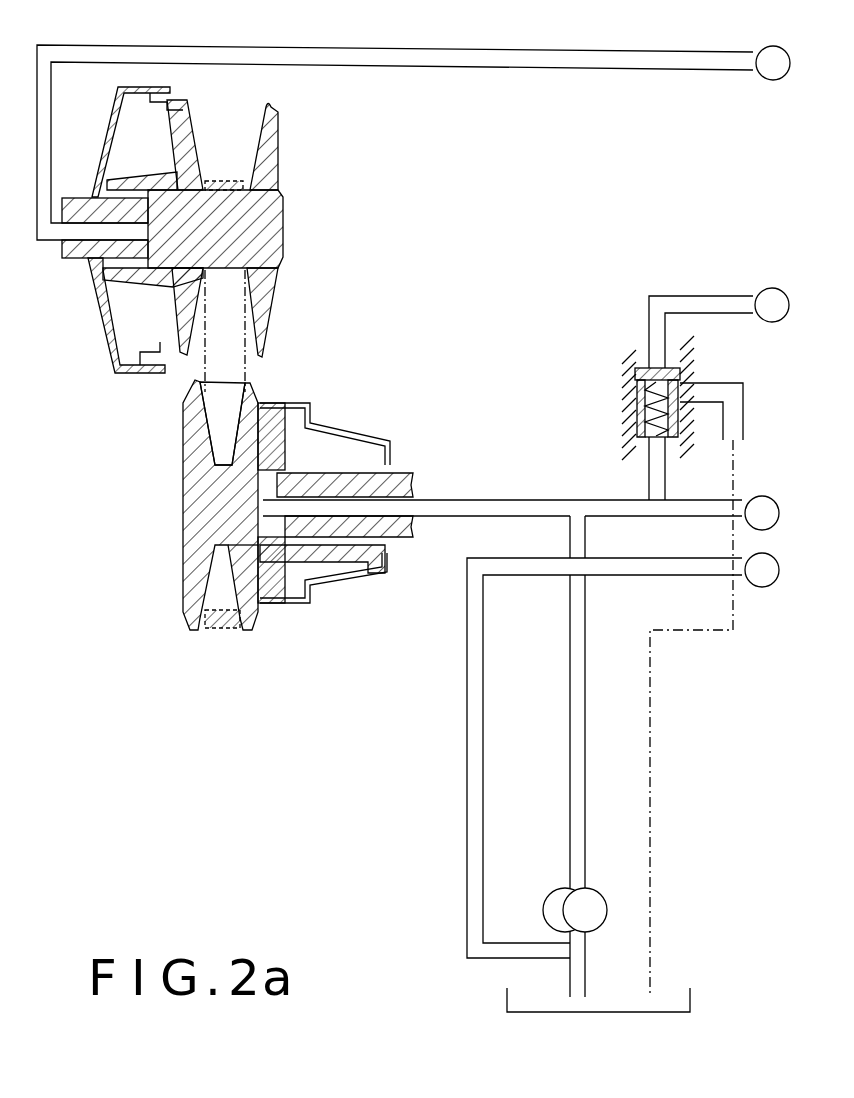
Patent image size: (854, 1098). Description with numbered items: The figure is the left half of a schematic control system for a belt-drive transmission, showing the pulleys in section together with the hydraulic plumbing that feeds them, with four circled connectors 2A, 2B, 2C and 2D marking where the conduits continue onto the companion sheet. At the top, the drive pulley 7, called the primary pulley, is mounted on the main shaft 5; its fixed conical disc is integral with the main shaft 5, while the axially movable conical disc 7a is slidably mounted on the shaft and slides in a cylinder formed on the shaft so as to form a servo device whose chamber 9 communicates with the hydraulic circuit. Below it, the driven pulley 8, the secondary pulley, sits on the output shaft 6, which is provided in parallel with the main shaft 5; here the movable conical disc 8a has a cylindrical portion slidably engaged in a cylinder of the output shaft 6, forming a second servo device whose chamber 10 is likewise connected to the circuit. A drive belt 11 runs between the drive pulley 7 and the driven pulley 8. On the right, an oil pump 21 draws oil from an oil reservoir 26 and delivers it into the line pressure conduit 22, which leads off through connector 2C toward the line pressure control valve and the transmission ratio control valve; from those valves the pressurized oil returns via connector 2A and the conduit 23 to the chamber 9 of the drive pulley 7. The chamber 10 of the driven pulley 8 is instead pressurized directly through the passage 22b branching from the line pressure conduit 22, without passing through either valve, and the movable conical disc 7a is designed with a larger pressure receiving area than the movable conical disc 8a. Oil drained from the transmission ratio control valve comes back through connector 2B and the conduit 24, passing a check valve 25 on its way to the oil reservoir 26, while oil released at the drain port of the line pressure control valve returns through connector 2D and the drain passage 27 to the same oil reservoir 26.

The main shaft 5 is at (84, 260).
The output shaft 6 is at (407, 474).
The drive pulley 7 is at (287, 134).
The movable conical disc 7a is at (198, 122).
The driven pulley 8 is at (178, 543).
The movable conical disc 8a is at (237, 432).
The chamber 9 is at (150, 152).
The chamber 10 is at (352, 562).
The drive belt 11 is at (223, 633).
The oil pump 21 is at (597, 902).
The line pressure conduit 22 is at (703, 501).
The passage 22b is at (545, 500).
The conduit 23 is at (588, 52).
The conduit 24 is at (708, 296).
The check valve 25 is at (635, 404).
The oil reservoir 26 is at (690, 1001).
The drain passage 27 is at (620, 577).
The connection to FIG. 2b 2A is at (773, 63).
The connection to FIG. 2b 2B is at (772, 305).
The connection to FIG. 2b 2C is at (762, 513).
The connection to FIG. 2b 2D is at (762, 570).